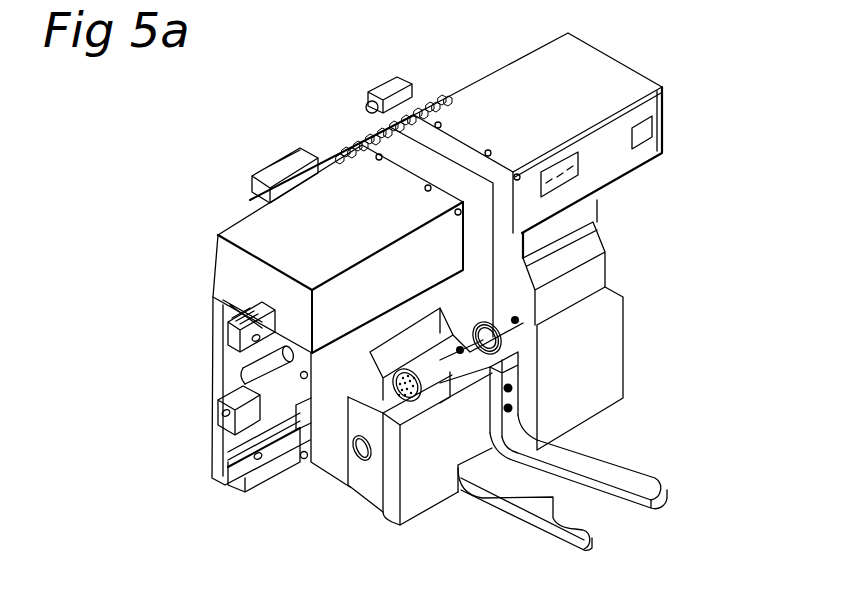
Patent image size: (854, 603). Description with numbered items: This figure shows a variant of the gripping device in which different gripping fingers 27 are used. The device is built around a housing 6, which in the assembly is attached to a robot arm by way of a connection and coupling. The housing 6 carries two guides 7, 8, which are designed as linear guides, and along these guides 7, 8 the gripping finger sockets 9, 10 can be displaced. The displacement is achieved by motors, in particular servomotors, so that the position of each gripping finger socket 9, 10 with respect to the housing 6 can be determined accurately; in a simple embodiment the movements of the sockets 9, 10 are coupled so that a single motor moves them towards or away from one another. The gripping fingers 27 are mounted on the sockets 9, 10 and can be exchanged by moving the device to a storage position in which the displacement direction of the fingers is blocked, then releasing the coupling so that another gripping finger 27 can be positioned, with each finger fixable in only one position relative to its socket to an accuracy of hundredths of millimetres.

The housing 6 is at (505, 80).
The guide 7 is at (230, 338).
The guide 8 is at (230, 458).
The gripping finger socket 9 is at (362, 487).
The gripping finger socket 10 is at (598, 280).
The gripping fingers 27 is at (648, 478).